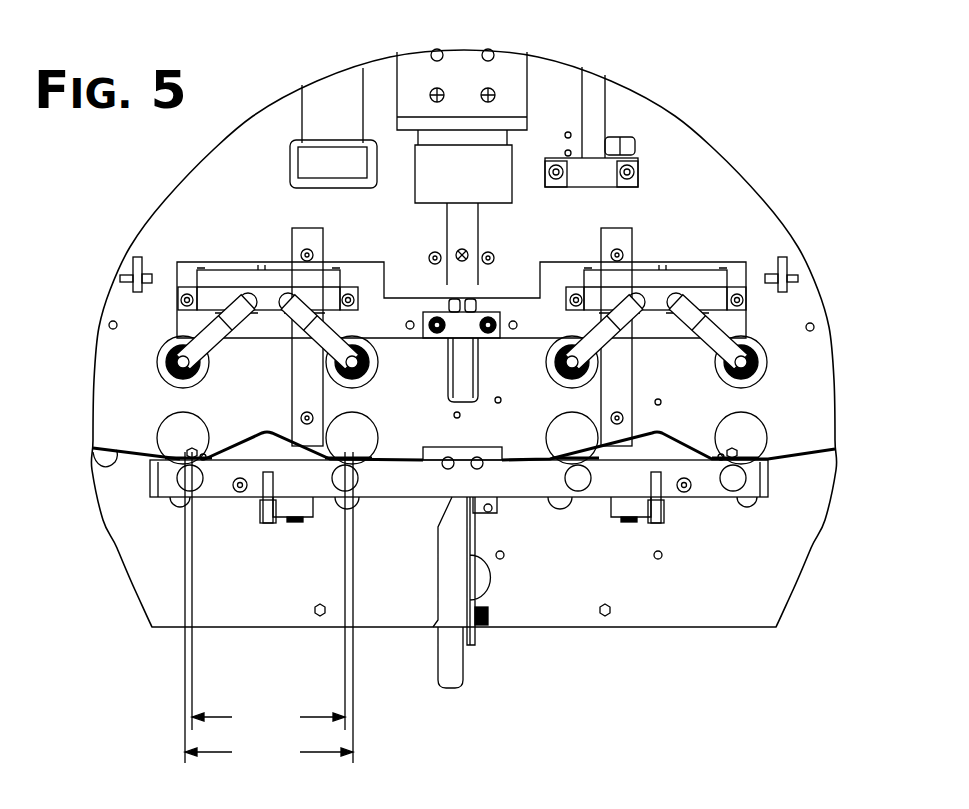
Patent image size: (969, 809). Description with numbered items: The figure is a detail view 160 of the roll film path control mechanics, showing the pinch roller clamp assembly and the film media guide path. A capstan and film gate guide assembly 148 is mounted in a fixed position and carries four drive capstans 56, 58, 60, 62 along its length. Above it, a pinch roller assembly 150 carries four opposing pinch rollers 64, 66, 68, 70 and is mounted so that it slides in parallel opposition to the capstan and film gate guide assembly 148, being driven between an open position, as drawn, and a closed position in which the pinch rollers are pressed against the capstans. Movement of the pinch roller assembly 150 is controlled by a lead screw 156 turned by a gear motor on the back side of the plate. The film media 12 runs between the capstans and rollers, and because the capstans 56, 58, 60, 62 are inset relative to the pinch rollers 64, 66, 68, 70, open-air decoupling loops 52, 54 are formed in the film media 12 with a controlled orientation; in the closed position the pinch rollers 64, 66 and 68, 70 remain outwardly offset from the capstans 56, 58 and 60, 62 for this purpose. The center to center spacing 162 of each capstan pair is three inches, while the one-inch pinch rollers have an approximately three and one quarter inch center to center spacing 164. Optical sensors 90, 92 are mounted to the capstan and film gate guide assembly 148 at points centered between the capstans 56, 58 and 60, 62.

The film media 12 is at (95, 463).
The decoupling loop 52 is at (258, 433).
The decoupling loop 54 is at (666, 446).
The drive capstan 56 is at (177, 494).
The drive capstan 58 is at (334, 487).
The drive capstan 60 is at (567, 489).
The drive capstan 62 is at (745, 498).
The pinch roller 64 is at (165, 420).
The pinch roller 66 is at (373, 417).
The pinch roller 68 is at (553, 420).
The pinch roller 70 is at (760, 420).
The optical sensor 90 is at (268, 488).
The optical sensor 92 is at (677, 498).
The capstan and film gate guide assembly 148 is at (389, 490).
The pinch roller assembly 150 is at (685, 260).
The lead screw 156 is at (477, 398).
The detail view 160 is at (688, 50).
The center to center spacing 162 is at (268, 591).
The center to center spacing 164 is at (269, 608).